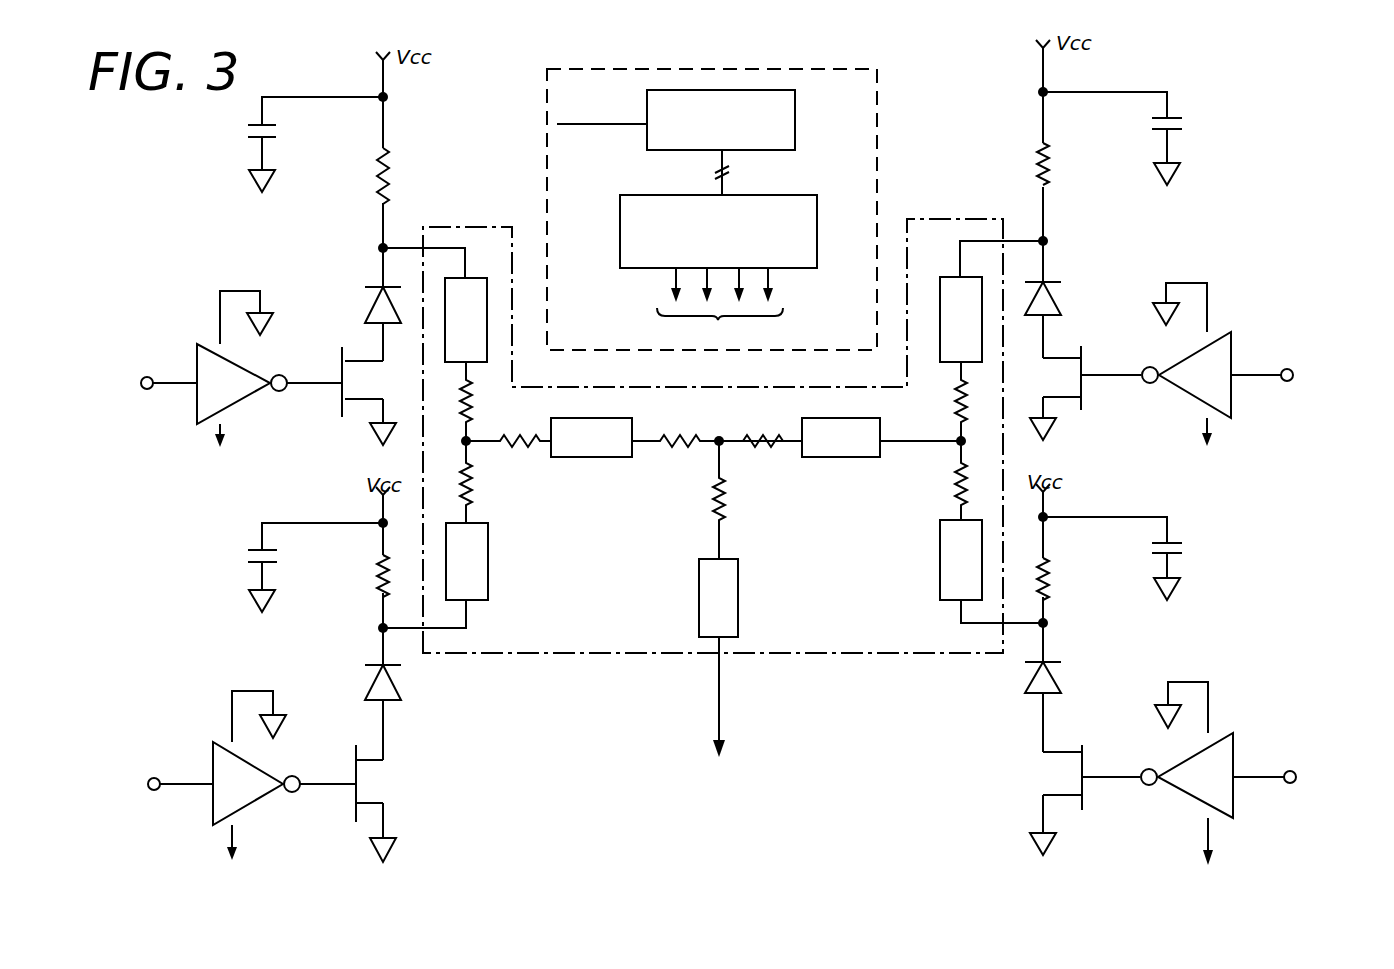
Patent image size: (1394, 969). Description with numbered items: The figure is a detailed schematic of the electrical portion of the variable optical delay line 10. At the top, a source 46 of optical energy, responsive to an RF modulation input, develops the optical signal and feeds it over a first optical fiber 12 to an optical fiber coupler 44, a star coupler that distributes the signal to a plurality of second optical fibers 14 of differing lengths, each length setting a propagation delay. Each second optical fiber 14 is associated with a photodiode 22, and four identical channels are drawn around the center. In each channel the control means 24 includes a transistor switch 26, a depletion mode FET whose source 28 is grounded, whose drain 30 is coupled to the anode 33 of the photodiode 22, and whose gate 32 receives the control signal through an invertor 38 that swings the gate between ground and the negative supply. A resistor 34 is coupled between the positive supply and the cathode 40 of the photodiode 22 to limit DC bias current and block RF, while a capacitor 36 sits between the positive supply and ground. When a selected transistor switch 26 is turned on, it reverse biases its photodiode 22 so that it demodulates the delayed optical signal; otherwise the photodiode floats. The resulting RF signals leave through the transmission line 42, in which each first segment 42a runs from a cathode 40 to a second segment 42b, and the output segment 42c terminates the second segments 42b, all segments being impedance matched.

The variable optical delay line 10 is at (910, 133).
The first optical fiber 12 is at (726, 188).
The second optical fibers 14 is at (727, 313).
The photodiode 22 is at (365, 323).
The control means 24 is at (196, 444).
The transistor switch 26 is at (352, 812).
The source 28 is at (350, 400).
The drain 30 is at (346, 364).
The gate 32 is at (312, 378).
The anode 33 is at (390, 332).
The resistor 34 is at (378, 176).
The capacitor 36 is at (248, 122).
The invertor 38 is at (197, 405).
The cathode 40 is at (375, 270).
The transmission line 42 is at (575, 653).
The first segment 42a is at (487, 350).
The second segment 42b is at (592, 457).
The output segment 42c is at (738, 614).
The optical fiber coupler 44 is at (620, 265).
The source of optical energy 46 is at (795, 112).